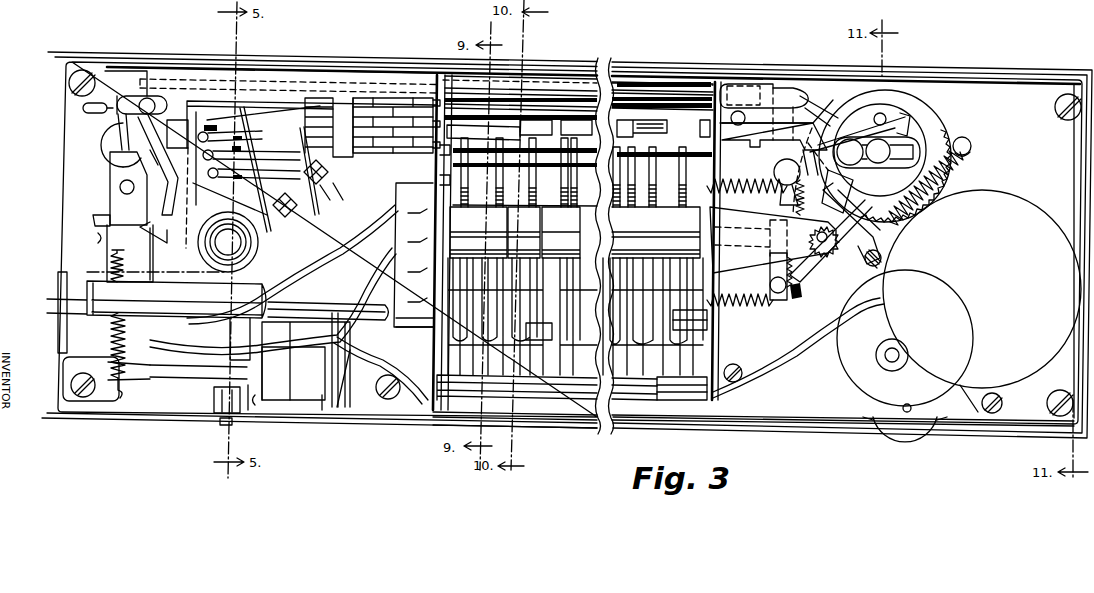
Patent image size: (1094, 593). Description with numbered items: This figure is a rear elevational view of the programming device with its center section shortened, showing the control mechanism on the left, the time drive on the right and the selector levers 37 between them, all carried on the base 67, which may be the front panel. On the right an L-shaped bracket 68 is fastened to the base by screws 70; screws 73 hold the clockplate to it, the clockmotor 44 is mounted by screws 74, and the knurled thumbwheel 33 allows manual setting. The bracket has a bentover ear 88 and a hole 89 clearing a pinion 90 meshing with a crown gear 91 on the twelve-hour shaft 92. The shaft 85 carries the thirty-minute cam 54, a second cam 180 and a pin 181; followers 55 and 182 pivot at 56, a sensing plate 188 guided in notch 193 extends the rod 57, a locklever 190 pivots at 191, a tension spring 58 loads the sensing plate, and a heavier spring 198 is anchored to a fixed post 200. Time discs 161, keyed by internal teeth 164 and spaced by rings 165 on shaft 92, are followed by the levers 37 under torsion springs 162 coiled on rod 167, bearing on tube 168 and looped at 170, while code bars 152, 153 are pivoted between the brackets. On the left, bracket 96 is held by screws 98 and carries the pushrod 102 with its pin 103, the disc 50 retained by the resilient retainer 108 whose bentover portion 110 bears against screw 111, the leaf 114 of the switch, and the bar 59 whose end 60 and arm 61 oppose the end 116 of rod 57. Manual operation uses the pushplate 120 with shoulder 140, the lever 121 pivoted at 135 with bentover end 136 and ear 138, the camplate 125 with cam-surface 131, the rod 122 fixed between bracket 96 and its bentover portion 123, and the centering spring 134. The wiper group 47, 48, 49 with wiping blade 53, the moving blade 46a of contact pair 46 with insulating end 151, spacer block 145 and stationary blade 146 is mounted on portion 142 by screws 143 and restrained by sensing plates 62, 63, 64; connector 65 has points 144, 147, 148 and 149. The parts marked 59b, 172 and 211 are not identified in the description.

The knurled thumbwheel 33 is at (905, 429).
The selector lever 37 is at (478, 232).
The clockmotor 44 is at (982, 289).
The contact pair 46 is at (350, 188).
The moving blade 46a is at (298, 214).
The wiper blade 47 is at (230, 134).
The wiper blade 48 is at (251, 153).
The wiper blade 49 is at (254, 175).
The disc 50 is at (275, 169).
The wiping blade 53 is at (218, 270).
The cam assembly 54 is at (885, 156).
The follower 55 is at (766, 117).
The pivot 56 is at (789, 187).
The rod 57 is at (189, 80).
The tension spring 58 is at (728, 175).
The bar 59 is at (126, 83).
The end plate (right) 59b is at (770, 86).
The operating end of bar 59 60 is at (96, 113).
The arm of bar 59 61 is at (329, 127).
The sensing plate 62 is at (377, 121).
The sensing plate 63 is at (395, 136).
The sensing plate 64 is at (420, 149).
The connector 65 is at (414, 319).
The base 67 is at (305, 64).
The L-shaped sheet metal bracket 68 is at (745, 443).
The screws 70 is at (1055, 103).
The screws 73 is at (742, 368).
The screws 74 is at (1003, 397).
The shaft 85 is at (882, 149).
The bentover ear 88 is at (773, 240).
The hole 89 is at (833, 257).
The pinion 90 is at (825, 258).
The crown gear 91 is at (802, 291).
The shaft 92 is at (753, 232).
The L-shaped bracket 96 is at (400, 442).
The screws 98 is at (83, 72).
The pushrod 102 is at (250, 251).
The pin 103 is at (243, 233).
The resilient retainer 108 is at (198, 363).
The bentover portion of retainer 108 110 is at (172, 367).
The screw 111 is at (233, 424).
The leaf 114 is at (103, 147).
The operating end of rod 57 116 is at (167, 107).
The pushplate 120 is at (124, 259).
The lever 121 is at (130, 217).
The rod 122 is at (313, 309).
The bentover portion of bracket 96 123 is at (44, 315).
The camplate 125 is at (163, 181).
The cam-surface 131 is at (143, 103).
The spring 134 is at (134, 348).
The pivot-point 135 is at (120, 187).
The bifurcated bentover end 136 is at (112, 160).
The bentover ear 138 is at (95, 220).
The shoulder 140 is at (97, 236).
The bentover portion of bracket 96 142 is at (355, 412).
The screws 143 is at (253, 393).
The point of connector 65 144 is at (414, 231).
The conducting spacer block 145 is at (306, 360).
The stationary blade 146 is at (326, 412).
The point of connector 65 147 is at (414, 261).
The point of connector 65 148 is at (413, 255).
The point of connector 65 149 is at (414, 291).
The insulating end 151 is at (332, 173).
The code bar 152 is at (483, 135).
The code bar 153 is at (536, 127).
The time disc 161 is at (544, 232).
The torsion spring 162 is at (539, 331).
The internal tooth 164 is at (576, 127).
The spacer rings 165 is at (656, 232).
The rod 167 is at (707, 316).
The tube 168 is at (698, 384).
The looped stationary ends 170 is at (503, 412).
The base plate 172 is at (547, 393).
The cam 180 is at (845, 188).
The pin 181 is at (881, 112).
The follower 182 is at (852, 208).
The sensing plate 188 is at (777, 137).
The locklever 190 is at (776, 271).
The pivot 191 is at (780, 294).
The notch 193 is at (750, 305).
The tension spring 198 is at (948, 177).
The fixed post 200 is at (967, 141).
The link 211 is at (908, 122).